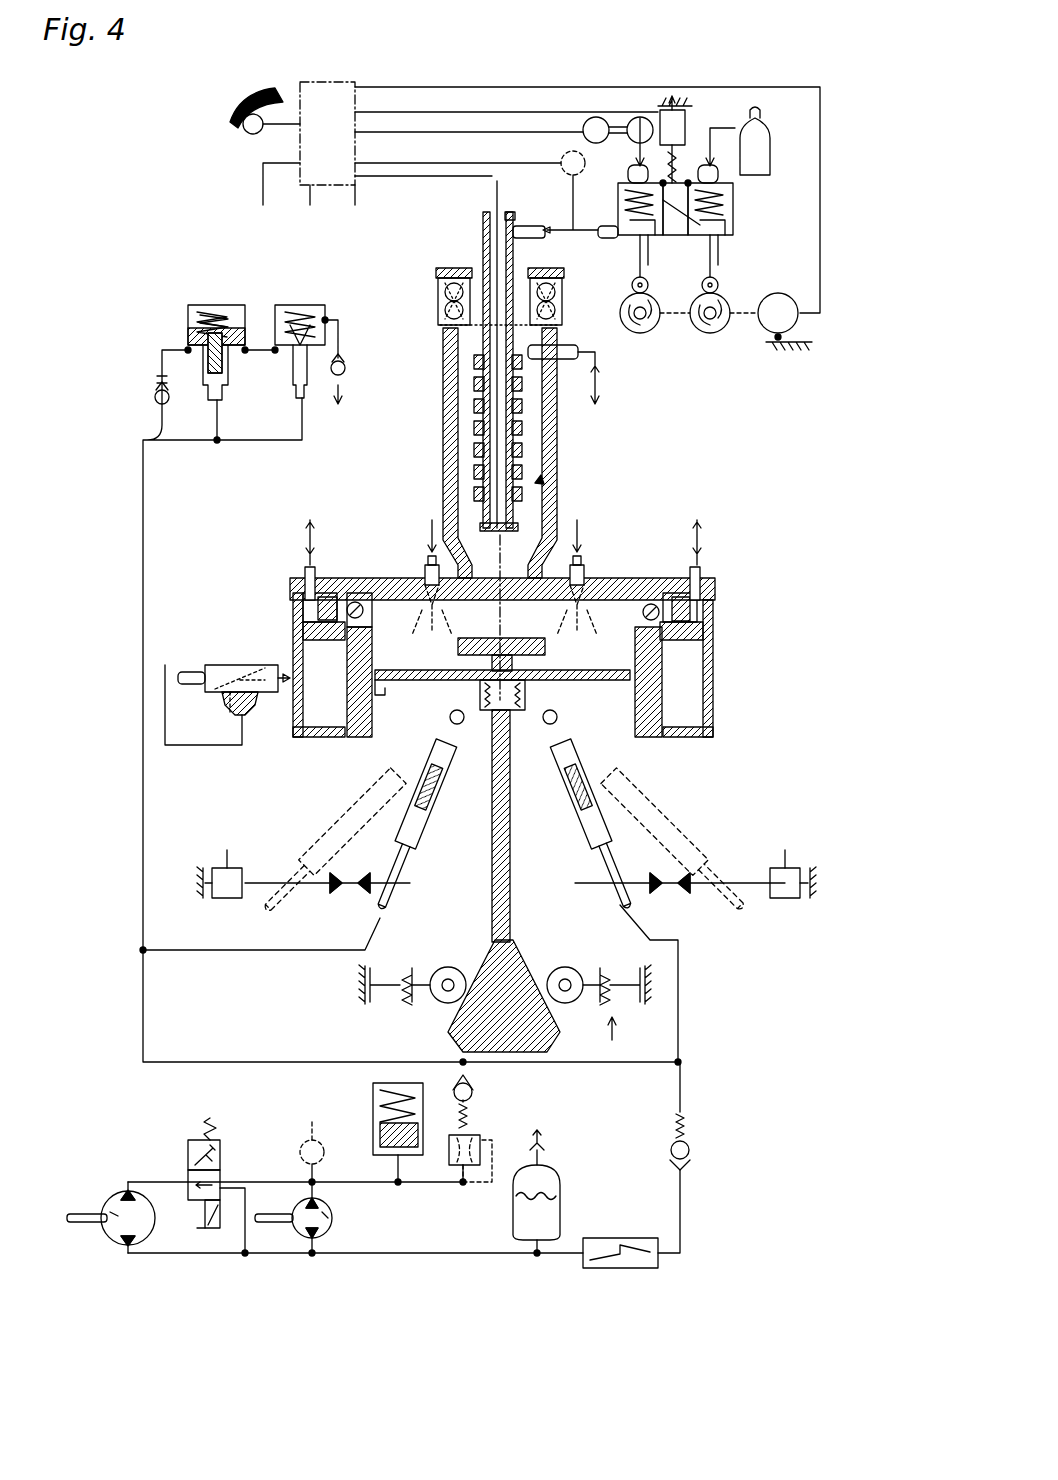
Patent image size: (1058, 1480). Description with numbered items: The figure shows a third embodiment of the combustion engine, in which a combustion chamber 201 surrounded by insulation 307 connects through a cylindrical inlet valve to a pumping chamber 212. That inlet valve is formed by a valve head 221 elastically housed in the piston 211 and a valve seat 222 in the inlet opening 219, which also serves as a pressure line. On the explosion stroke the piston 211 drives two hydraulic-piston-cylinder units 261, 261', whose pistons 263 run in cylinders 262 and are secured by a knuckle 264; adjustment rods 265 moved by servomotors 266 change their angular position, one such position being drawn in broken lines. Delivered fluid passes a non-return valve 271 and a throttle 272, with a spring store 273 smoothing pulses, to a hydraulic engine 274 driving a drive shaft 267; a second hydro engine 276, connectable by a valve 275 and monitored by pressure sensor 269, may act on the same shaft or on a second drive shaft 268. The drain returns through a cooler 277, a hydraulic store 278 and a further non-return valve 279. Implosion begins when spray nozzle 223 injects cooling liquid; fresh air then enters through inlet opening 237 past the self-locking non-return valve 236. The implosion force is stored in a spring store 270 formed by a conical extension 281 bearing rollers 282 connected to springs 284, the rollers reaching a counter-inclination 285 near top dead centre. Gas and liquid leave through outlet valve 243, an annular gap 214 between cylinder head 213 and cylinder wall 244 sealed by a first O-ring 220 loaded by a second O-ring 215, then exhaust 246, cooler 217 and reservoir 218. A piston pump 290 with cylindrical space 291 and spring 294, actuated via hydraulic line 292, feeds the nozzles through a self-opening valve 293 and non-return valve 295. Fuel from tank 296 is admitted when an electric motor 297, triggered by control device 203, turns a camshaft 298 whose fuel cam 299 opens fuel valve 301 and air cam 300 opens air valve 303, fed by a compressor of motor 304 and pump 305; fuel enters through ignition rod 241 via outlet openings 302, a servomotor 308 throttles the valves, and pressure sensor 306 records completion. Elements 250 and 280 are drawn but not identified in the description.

The combustion chamber 201 is at (530, 460).
The control device 203 is at (318, 95).
The piston 211 is at (713, 718).
The pumping chamber 212 is at (717, 677).
The cylinder head 213 is at (700, 592).
The annular gap 214 is at (306, 572).
The second O-ring 215 is at (318, 612).
The cooler 217 is at (215, 672).
The reservoir 218 is at (235, 705).
The inlet opening 219 is at (316, 525).
The first elastic O-ring 220 is at (347, 648).
The valve head 221 is at (713, 697).
The valve seat 222 is at (695, 590).
The spray nozzle 223 is at (430, 578).
The self-locking non-return valve 236 is at (445, 300).
The inlet opening 237 is at (468, 276).
The ignition rod 241 is at (540, 482).
The outlet valve 243 is at (378, 632).
The cylinder wall 244 is at (720, 648).
The exhaust 246 is at (190, 684).
The valve 250 is at (285, 658).
The hydraulic-piston-cylinder unit 261 is at (779, 782).
The hydraulic-piston-cylinder unit 261' is at (253, 828).
The cylinder 262 is at (700, 885).
The piston 263 is at (640, 852).
The knuckle 264 is at (630, 737).
The adjustment rod 265 is at (517, 900).
The servomotor 266 is at (785, 896).
The drive shaft 267 is at (280, 1222).
The second drive shaft 268 is at (85, 1222).
The pressure sensor 269 is at (300, 1142).
The spring store 270 is at (612, 1042).
The non-return valve 271 is at (530, 1215).
The throttle 272 is at (455, 1190).
The spring store 273 is at (385, 1150).
The hydraulic engine 274 is at (322, 1225).
The valve 275 is at (190, 1140).
The second hydro engine 276 is at (118, 1212).
The cooler 277 is at (640, 1262).
The hydraulic store 278 is at (475, 1105).
The non-return valve 279 is at (697, 1150).
The roller 280 is at (572, 1000).
The conical extension 281 is at (483, 1010).
The rollers 282 is at (575, 1065).
The springs 284 is at (630, 1007).
The counter-inclination 285 is at (463, 1030).
The piston pump 290 is at (180, 297).
The cylindrical space 291 is at (158, 390).
The hydraulic line 292 is at (142, 458).
The self-opening valve 293 is at (283, 293).
The spring 294 is at (217, 313).
The non-return valve 295 is at (155, 378).
The tank 296 is at (757, 150).
The electric motor 297 is at (797, 322).
The camshaft 298 is at (752, 348).
The fuel cam 299 is at (712, 333).
The air cam 300 is at (645, 335).
The fuel valve 301 is at (733, 205).
The outlet openings 302 is at (520, 437).
The air valve 303 is at (735, 232).
The motor 304 is at (597, 116).
The pump 305 is at (640, 116).
The pressure sensor 306 is at (573, 150).
The insulation 307 is at (447, 408).
The servomotor 308 is at (688, 118).